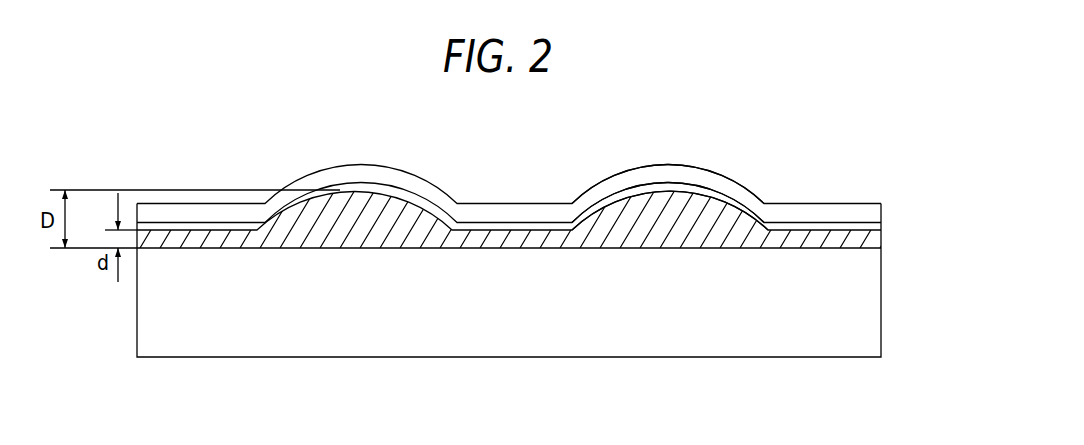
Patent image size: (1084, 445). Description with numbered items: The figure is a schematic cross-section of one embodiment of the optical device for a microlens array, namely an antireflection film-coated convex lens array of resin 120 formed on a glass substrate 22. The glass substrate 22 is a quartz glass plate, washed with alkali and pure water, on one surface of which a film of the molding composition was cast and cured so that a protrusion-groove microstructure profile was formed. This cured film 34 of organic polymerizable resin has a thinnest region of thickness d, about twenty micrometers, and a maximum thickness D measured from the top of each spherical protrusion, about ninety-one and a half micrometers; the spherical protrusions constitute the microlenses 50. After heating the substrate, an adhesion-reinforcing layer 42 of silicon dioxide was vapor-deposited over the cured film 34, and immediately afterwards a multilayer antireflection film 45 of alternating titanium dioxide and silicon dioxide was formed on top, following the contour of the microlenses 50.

The convex lens array of resin 120 is at (891, 117).
The glass substrate 22 is at (882, 300).
The cured film 34 is at (882, 242).
The adhesion-reinforcing layer 42 is at (882, 227).
The antireflection film 45 is at (882, 215).
The microlenses 50 is at (678, 160).